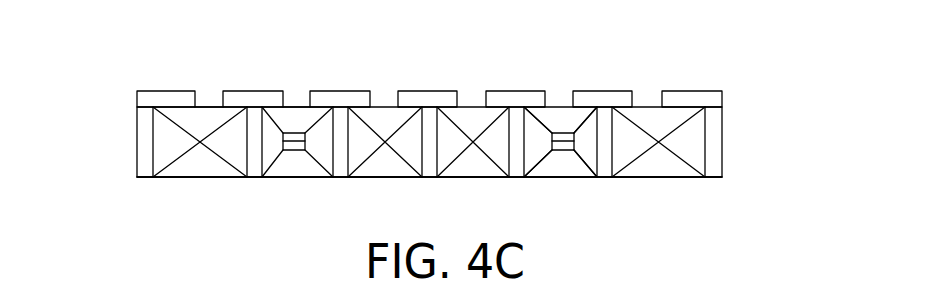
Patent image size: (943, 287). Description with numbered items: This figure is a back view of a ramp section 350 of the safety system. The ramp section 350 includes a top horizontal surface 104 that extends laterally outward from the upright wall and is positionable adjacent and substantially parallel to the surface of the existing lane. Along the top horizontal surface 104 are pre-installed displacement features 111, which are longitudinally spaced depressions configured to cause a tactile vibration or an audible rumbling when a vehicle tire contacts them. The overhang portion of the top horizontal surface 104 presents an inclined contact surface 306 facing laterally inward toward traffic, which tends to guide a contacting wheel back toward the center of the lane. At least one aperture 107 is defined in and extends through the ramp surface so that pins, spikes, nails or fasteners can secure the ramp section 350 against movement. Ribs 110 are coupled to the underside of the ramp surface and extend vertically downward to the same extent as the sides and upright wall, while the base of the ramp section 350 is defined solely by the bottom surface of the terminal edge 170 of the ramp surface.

The top horizontal surface 104 is at (160, 91).
The displacement feature 111 is at (293, 88).
The contact surface 306 is at (722, 100).
The ramp section 350 is at (727, 142).
The terminal edge 170 is at (180, 177).
The aperture 107 is at (552, 143).
The rib 110 is at (600, 168).